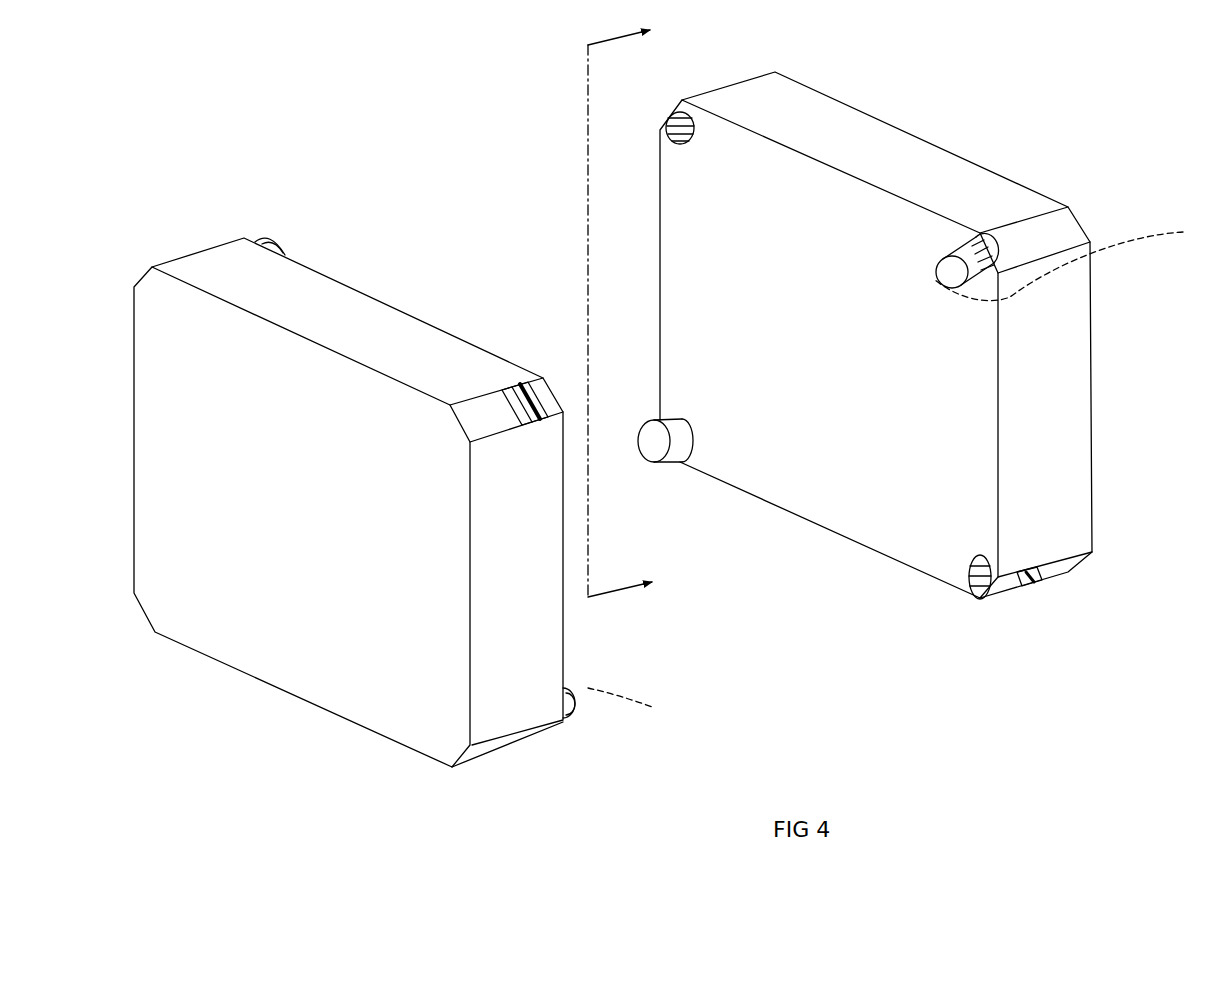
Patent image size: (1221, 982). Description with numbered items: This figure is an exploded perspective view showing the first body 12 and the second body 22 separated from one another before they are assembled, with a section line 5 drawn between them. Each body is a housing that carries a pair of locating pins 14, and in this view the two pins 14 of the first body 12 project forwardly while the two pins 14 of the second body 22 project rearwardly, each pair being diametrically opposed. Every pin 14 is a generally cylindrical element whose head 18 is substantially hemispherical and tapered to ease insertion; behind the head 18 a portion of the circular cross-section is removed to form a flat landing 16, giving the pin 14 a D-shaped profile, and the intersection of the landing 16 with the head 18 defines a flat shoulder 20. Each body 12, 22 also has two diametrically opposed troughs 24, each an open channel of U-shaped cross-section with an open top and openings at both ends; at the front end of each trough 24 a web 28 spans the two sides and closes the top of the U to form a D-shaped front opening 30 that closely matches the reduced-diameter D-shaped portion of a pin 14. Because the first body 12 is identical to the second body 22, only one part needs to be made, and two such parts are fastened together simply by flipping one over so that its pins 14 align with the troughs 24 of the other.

The first body 12 is at (937, 127).
The second body 22 is at (185, 247).
The locating pin 14 is at (899, 469).
The landing 16 is at (566, 722).
The head 18 is at (257, 240).
The shoulder 20 is at (578, 718).
The trough 24 is at (520, 400).
The web 28 is at (546, 388).
The front opening 30 is at (660, 130).
The section line 5 is at (633, 306).